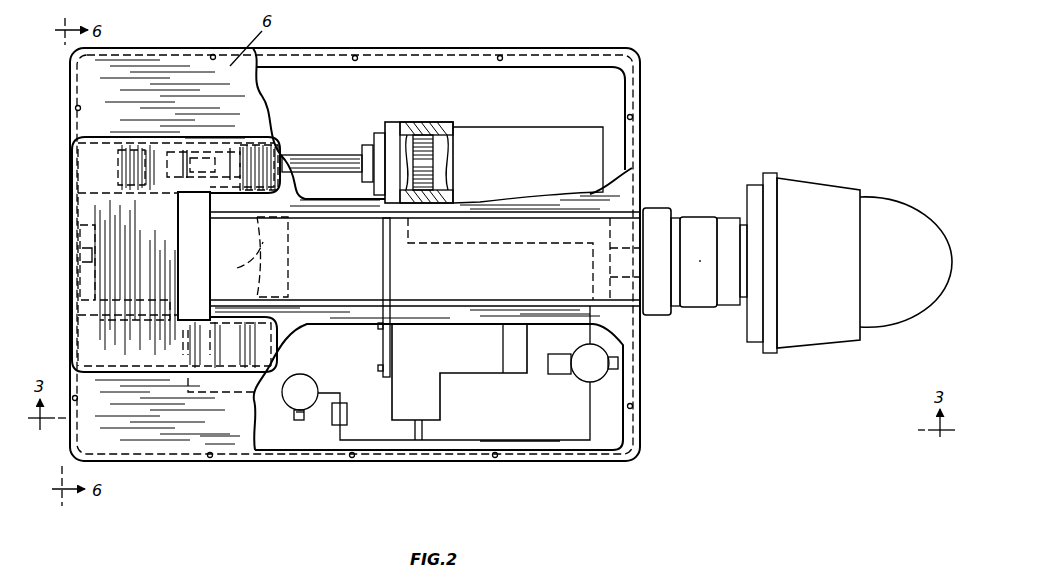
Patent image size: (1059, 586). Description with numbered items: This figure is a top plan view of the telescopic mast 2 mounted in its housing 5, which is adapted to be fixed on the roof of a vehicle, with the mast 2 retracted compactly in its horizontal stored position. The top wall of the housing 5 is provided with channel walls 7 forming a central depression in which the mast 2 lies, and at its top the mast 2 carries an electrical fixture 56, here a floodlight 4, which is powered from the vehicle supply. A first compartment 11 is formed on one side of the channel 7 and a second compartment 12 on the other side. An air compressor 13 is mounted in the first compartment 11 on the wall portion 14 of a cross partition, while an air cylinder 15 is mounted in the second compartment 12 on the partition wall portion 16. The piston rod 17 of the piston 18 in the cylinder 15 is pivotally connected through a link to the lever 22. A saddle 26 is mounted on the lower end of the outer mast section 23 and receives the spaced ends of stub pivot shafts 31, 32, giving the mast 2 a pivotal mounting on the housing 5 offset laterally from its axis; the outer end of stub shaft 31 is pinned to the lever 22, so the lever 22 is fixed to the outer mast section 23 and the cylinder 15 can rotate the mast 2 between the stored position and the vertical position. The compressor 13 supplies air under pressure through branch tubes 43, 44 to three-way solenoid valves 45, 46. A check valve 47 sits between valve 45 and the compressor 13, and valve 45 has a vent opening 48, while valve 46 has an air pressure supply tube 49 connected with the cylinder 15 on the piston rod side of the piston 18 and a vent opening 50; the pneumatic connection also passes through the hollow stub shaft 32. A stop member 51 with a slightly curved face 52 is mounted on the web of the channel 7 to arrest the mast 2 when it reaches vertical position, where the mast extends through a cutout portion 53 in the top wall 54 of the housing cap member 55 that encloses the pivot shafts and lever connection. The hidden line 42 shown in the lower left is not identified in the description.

The mast 2 is at (676, 319).
The floodlight 4 is at (896, 209).
The housing 5 is at (648, 96).
The channel walls 7 is at (88, 202).
The first compartment 11 is at (528, 396).
The second compartment 12 is at (489, 95).
The air compressor 13 is at (480, 363).
The wall portion 14 is at (382, 344).
The air cylinder 15 is at (547, 148).
The partition wall portion 16 is at (383, 130).
The piston rod 17 is at (318, 154).
The piston 18 is at (437, 162).
The lever 22 is at (133, 140).
The outer mast section 23 is at (590, 231).
The saddle 26 is at (192, 228).
The stub pivot shaft 31 is at (180, 160).
The stub pivot shaft 32 is at (176, 346).
The hidden wire 42 is at (186, 380).
The branch tube 43 is at (372, 438).
The branch tube 44 is at (503, 439).
The 3-way solenoid valve 45 is at (294, 398).
The 3-way solenoid valve 46 is at (585, 368).
The check valve 47 is at (334, 427).
The vent opening 48 is at (299, 421).
The air pressure supply tube 49 is at (590, 279).
The vent opening 50 is at (620, 366).
The stop member 51 is at (290, 245).
The curved face 52 is at (244, 264).
The cutout portion 53 is at (190, 300).
The top wall 54 is at (108, 318).
The housing cap member 55 is at (265, 137).
The electrical fixture 56 is at (799, 169).